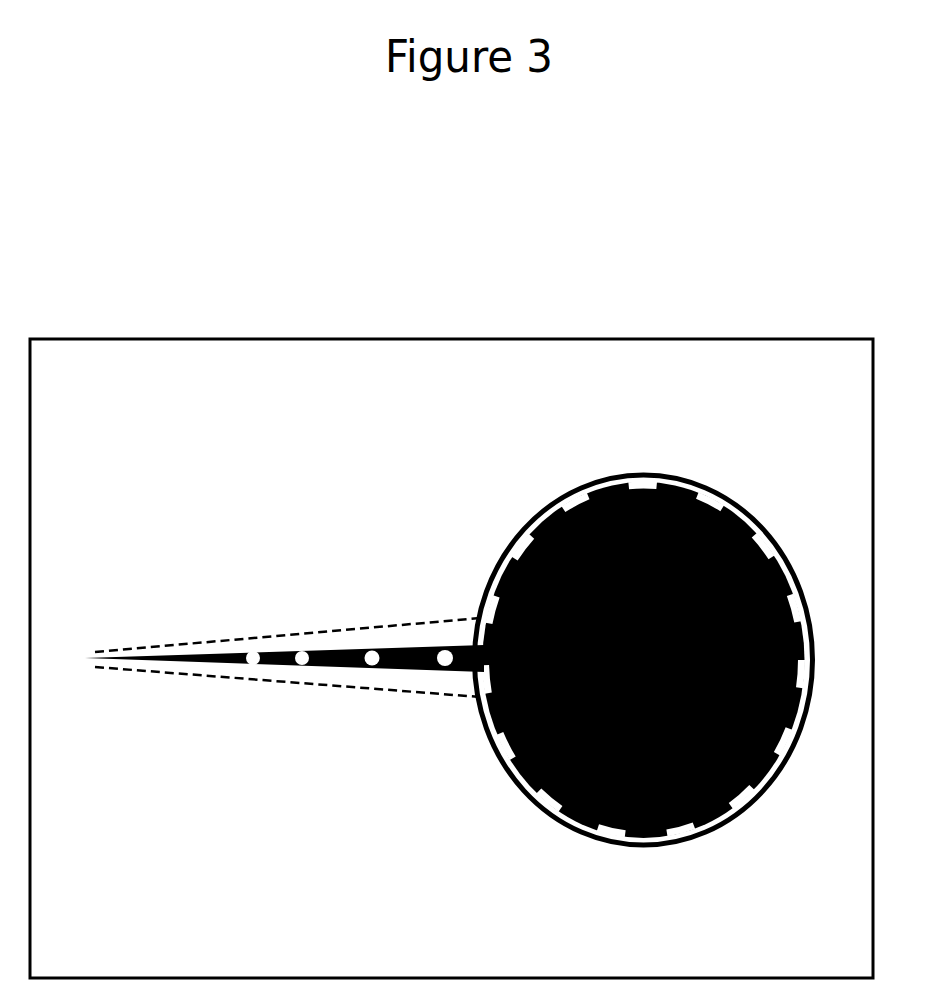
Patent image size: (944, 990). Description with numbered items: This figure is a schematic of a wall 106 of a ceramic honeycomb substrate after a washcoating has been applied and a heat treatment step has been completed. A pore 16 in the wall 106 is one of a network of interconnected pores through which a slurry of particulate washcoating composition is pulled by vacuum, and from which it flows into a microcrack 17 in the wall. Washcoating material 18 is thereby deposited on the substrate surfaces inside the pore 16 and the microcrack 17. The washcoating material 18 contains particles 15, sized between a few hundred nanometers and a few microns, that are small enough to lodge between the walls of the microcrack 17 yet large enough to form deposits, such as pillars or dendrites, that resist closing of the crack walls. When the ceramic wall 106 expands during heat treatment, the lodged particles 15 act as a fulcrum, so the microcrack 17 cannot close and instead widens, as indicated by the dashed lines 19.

The wall 106 is at (392, 383).
The pore 16 is at (777, 545).
The washcoating material 18 is at (512, 765).
The microcrack 17 is at (340, 650).
The particles 15 is at (368, 662).
The dashed lines 19 is at (238, 638).